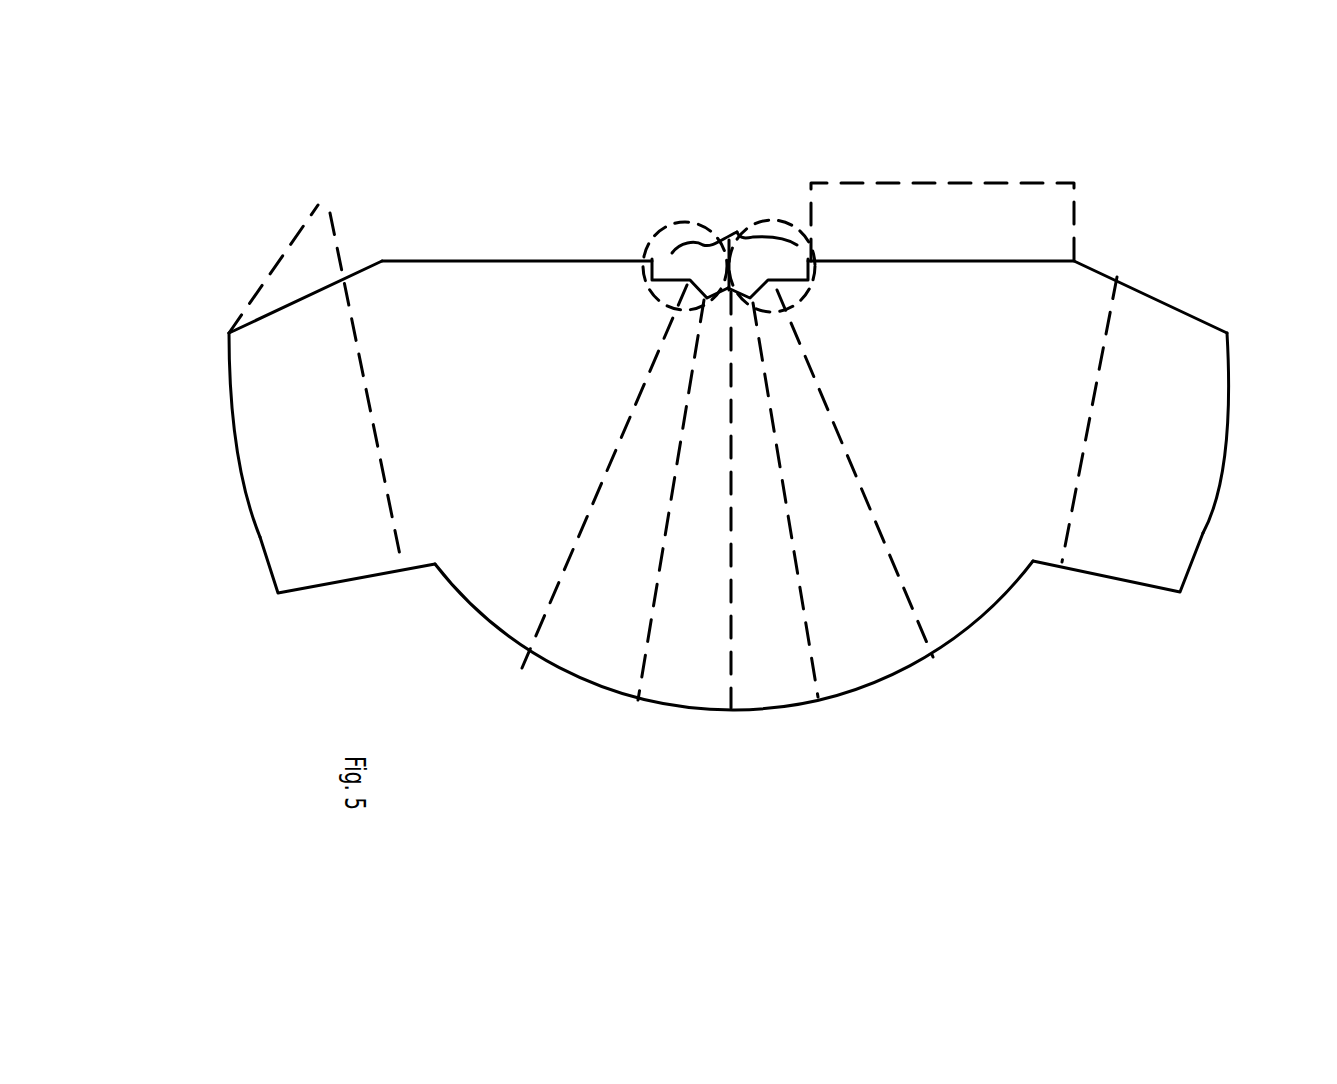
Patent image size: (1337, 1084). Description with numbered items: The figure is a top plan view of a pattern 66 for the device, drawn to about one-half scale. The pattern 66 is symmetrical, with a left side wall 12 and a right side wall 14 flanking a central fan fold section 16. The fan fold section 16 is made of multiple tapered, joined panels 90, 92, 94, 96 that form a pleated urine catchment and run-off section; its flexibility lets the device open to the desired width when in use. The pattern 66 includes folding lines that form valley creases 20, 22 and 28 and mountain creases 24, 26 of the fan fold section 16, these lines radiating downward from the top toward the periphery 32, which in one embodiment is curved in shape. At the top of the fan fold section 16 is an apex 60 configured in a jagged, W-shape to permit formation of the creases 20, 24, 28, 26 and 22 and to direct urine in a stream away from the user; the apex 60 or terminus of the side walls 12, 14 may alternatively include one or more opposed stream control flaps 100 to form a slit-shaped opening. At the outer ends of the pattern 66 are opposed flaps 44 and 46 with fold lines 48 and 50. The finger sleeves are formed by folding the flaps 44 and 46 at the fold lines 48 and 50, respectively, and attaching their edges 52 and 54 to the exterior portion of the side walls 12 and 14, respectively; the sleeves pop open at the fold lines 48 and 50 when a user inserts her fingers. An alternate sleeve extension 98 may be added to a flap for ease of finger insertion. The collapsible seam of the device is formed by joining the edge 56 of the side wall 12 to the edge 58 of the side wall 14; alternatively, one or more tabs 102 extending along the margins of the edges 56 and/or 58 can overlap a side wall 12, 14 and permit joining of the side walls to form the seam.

The side wall 12 is at (534, 426).
The side wall 14 is at (994, 402).
The fan fold section 16 is at (740, 535).
The valley crease 20 is at (522, 668).
The valley crease 22 is at (940, 660).
The mountain crease 24 is at (638, 700).
The mountain crease 26 is at (820, 703).
The valley crease 28 is at (734, 713).
The periphery 32 is at (992, 648).
The flap 44 is at (280, 430).
The flap 46 is at (1182, 487).
The fold line 48 is at (333, 228).
The fold line 50 is at (1117, 280).
The edge 52 is at (258, 540).
The edge 54 is at (1203, 533).
The edge 56 is at (527, 262).
The edge 58 is at (918, 260).
The apex 60 is at (771, 252).
The pattern 66 is at (947, 112).
The panel 90 is at (613, 645).
The panel 92 is at (670, 654).
The panel 94 is at (752, 654).
The panel 96 is at (838, 644).
The sleeve extension 98 is at (287, 270).
The stream control flap 100 is at (683, 233).
The tab 102 is at (1003, 207).